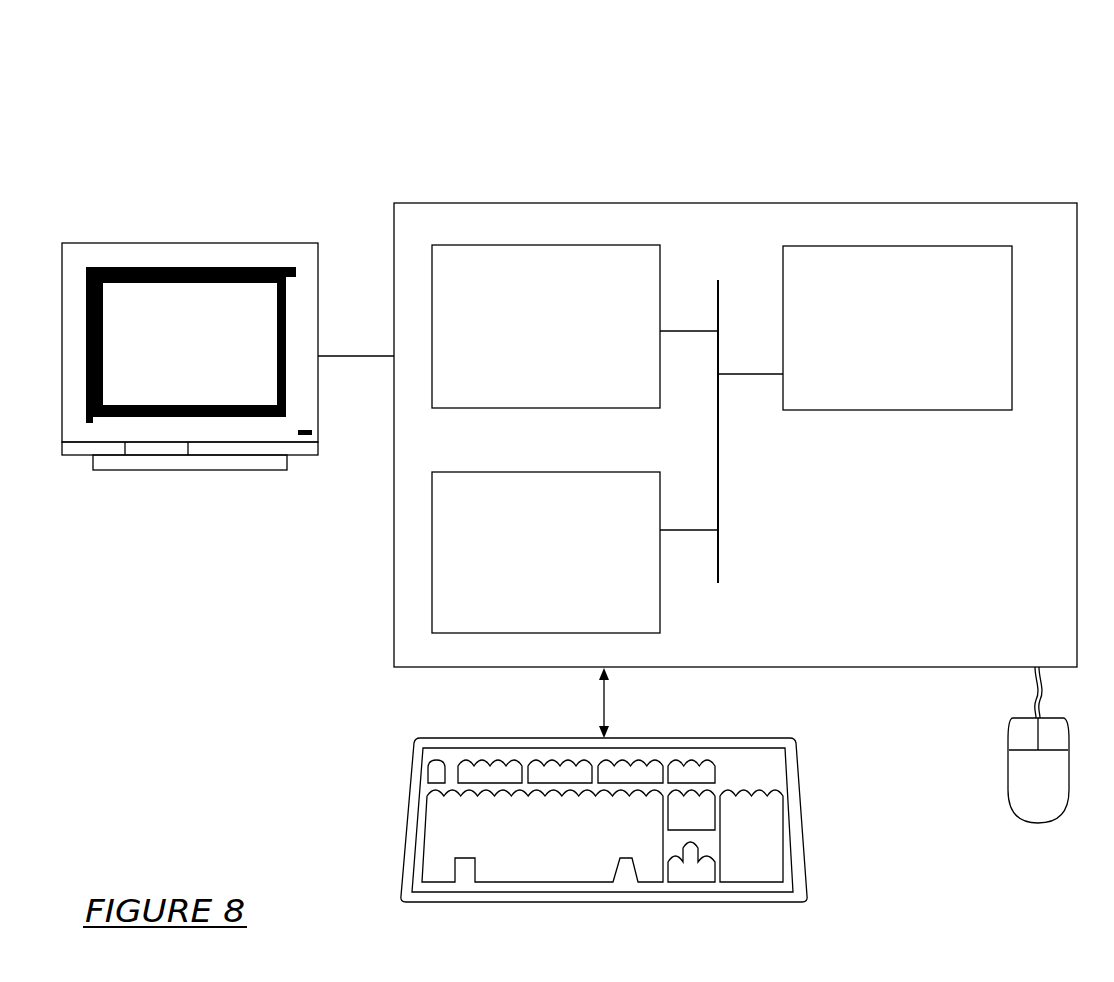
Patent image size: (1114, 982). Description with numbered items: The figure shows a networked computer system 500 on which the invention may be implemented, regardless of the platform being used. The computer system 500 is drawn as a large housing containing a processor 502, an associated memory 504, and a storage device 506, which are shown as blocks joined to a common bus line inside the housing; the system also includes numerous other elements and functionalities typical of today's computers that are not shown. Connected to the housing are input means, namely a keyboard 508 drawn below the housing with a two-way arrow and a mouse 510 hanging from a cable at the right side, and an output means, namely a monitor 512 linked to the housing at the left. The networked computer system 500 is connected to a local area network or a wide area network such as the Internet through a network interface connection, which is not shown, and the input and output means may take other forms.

The networked computer system 500 is at (953, 76).
The processor 502 is at (895, 339).
The memory 504 is at (527, 338).
The storage device 506 is at (523, 565).
The keyboard 508 is at (514, 859).
The mouse 510 is at (1020, 796).
The monitor 512 is at (171, 360).